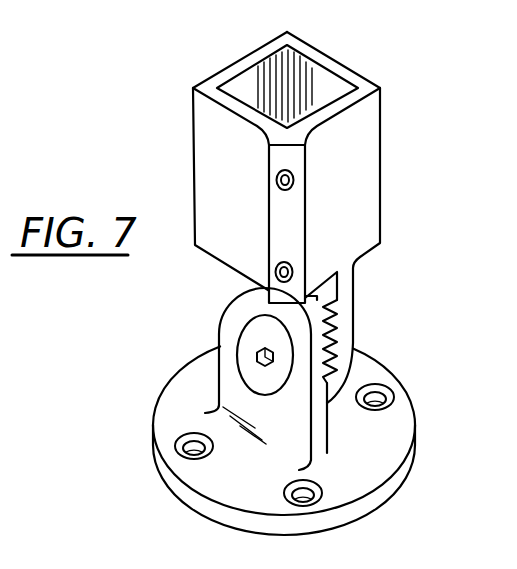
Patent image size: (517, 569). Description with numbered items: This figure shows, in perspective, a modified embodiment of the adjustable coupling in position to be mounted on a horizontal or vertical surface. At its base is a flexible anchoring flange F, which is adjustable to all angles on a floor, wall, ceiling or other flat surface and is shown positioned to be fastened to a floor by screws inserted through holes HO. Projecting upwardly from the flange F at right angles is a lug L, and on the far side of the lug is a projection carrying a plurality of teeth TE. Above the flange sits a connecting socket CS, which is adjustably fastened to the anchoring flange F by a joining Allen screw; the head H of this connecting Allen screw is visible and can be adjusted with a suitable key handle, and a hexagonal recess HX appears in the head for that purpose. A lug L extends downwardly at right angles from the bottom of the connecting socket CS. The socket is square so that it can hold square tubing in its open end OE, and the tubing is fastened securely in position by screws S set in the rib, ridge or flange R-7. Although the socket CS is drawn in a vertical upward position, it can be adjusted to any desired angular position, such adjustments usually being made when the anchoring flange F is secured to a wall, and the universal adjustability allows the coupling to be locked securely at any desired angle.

The open end OE is at (323, 82).
The connecting socket CS is at (373, 128).
The rib, ridge or flange R-7 is at (278, 223).
The screws S is at (290, 262).
The lug L is at (350, 283).
The teeth TE is at (328, 304).
The head of the connecting Allen screw H is at (252, 313).
The hexagonal nut HX is at (259, 348).
The flange F is at (176, 390).
The holes HO is at (388, 392).